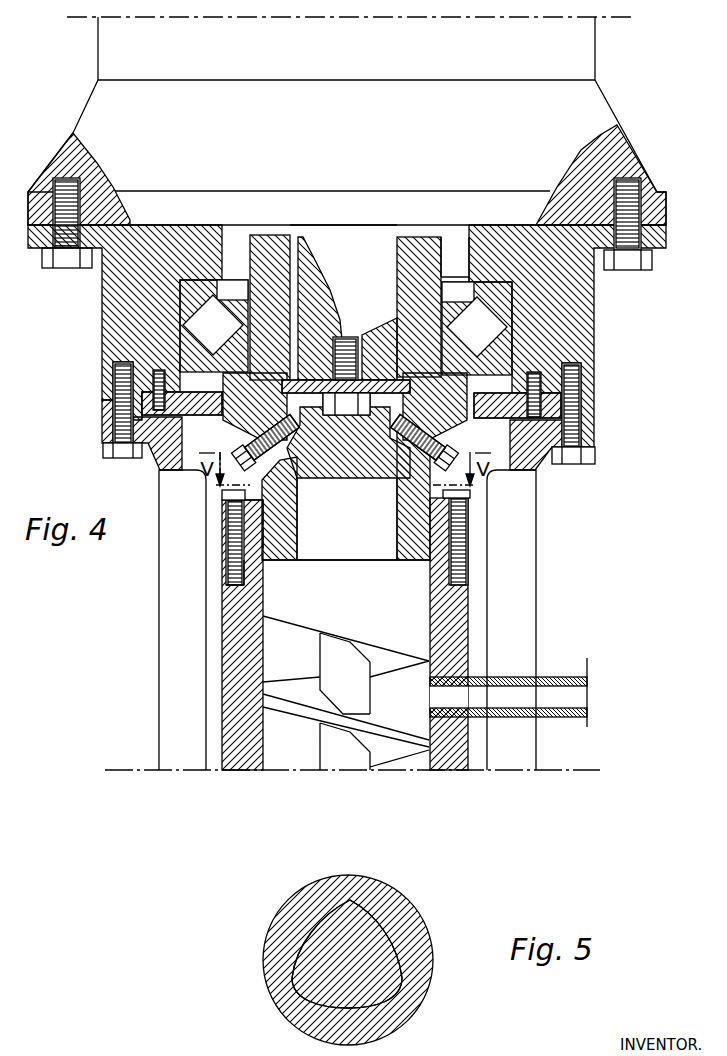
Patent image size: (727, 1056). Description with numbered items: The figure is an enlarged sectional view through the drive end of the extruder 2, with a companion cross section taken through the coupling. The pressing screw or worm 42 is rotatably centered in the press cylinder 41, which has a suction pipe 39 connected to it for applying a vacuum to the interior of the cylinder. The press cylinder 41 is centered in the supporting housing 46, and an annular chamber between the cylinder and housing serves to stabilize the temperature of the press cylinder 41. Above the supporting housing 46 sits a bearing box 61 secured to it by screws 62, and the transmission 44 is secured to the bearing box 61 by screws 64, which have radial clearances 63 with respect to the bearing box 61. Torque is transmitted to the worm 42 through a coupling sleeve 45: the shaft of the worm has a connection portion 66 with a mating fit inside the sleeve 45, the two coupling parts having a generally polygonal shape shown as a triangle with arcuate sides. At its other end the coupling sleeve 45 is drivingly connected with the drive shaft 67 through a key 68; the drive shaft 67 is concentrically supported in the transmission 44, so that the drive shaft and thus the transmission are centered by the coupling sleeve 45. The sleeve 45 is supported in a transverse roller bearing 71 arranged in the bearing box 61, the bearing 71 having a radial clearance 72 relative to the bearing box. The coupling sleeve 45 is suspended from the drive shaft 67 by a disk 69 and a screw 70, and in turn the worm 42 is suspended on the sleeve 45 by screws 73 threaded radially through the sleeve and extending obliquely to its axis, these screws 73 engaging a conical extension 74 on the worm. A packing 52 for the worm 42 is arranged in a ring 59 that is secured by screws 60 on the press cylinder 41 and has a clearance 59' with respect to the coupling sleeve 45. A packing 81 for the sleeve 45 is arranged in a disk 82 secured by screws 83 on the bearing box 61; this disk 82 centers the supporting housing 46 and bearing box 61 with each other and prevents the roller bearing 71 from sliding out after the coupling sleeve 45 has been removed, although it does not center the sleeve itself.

In FIG. 4, the extruder 2 is at (142, 581).
In FIG. 4, the suction pipe 39 is at (590, 678).
In FIG. 4, the press cylinder 41 is at (465, 616).
In FIG. 4, the pressing screw or worm 42 is at (285, 690).
In FIG. 4, the transmission 44 is at (603, 123).
In FIG. 4, the coupling sleeve 45 is at (292, 493).
In FIG. 5, the coupling sleeve 45 is at (388, 900).
In FIG. 4, the supporting housing 46 is at (521, 453).
In FIG. 4, the packing 52 is at (259, 537).
In FIG. 4, the ring 59 is at (256, 581).
In FIG. 4, the clearance 59' is at (289, 514).
In FIG. 4, the screws 60 is at (226, 550).
In FIG. 4, the bearing box 61 is at (580, 326).
In FIG. 4, the screws 62 is at (582, 396).
In FIG. 4, the radial clearances 63 is at (640, 197).
In FIG. 4, the screws 64 is at (634, 262).
In FIG. 4, the connection portion 66 is at (376, 512).
In FIG. 5, the connection portion 66 is at (398, 985).
In FIG. 4, the drive shaft 67 is at (353, 240).
In FIG. 4, the key 68 is at (302, 292).
In FIG. 4, the disk 69 is at (386, 380).
In FIG. 4, the screw 70 is at (349, 338).
In FIG. 4, the transverse roller bearing 71 is at (470, 315).
In FIG. 4, the radial clearance 72 is at (521, 305).
In FIG. 4, the screws 73 is at (455, 447).
In FIG. 4, the conical extension 74 is at (250, 442).
In FIG. 4, the packing 81 is at (181, 424).
In FIG. 4, the disk 82 is at (178, 440).
In FIG. 4, the screws 83 is at (160, 375).